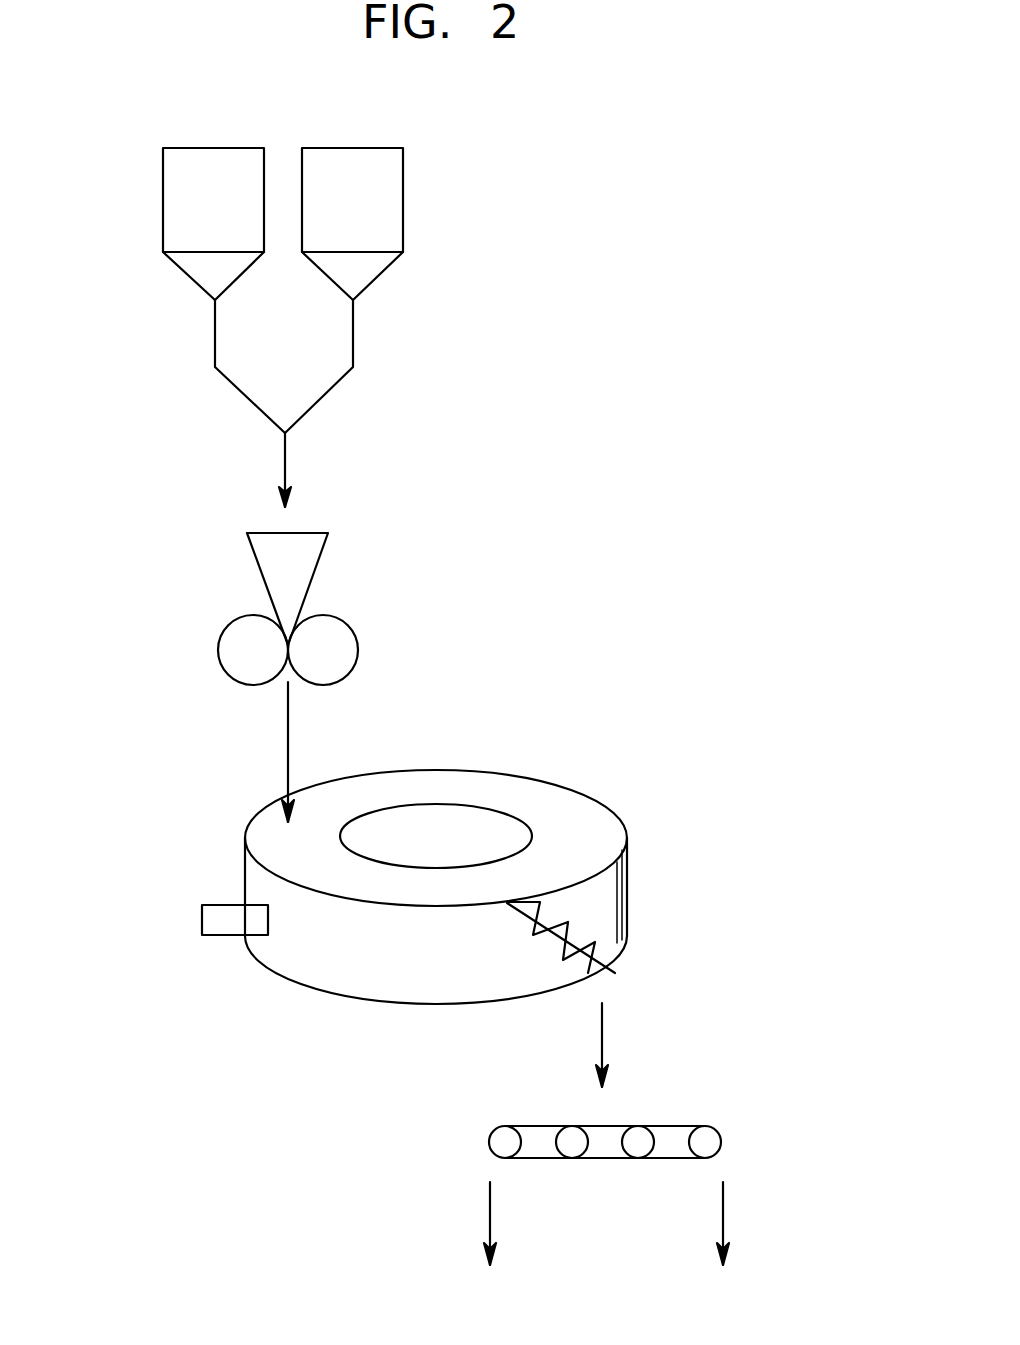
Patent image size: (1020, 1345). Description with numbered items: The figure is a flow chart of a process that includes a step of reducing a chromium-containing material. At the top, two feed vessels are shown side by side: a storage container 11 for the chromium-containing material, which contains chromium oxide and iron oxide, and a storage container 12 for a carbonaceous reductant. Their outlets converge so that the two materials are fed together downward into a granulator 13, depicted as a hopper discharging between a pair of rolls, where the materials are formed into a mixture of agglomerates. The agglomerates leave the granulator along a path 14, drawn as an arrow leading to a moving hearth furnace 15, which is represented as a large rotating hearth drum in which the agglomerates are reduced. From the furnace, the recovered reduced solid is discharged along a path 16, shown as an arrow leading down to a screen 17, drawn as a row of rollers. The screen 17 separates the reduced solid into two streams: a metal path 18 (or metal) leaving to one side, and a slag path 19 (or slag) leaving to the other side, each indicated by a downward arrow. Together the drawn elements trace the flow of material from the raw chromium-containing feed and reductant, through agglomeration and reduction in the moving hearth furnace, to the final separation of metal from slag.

The storage container for chromium-containing material 11 is at (185, 199).
The storage container for carbonaceous reductant 12 is at (385, 193).
The granulator 13 is at (335, 618).
The path for mixture (agglomerates) 14 is at (290, 728).
The moving hearth furnace 15 is at (555, 780).
The path for recovered reduced solid 16 is at (602, 1030).
The screen 17 is at (540, 1125).
The metal path (or metal) 18 is at (721, 1243).
The slag path (or slag) 19 is at (491, 1243).